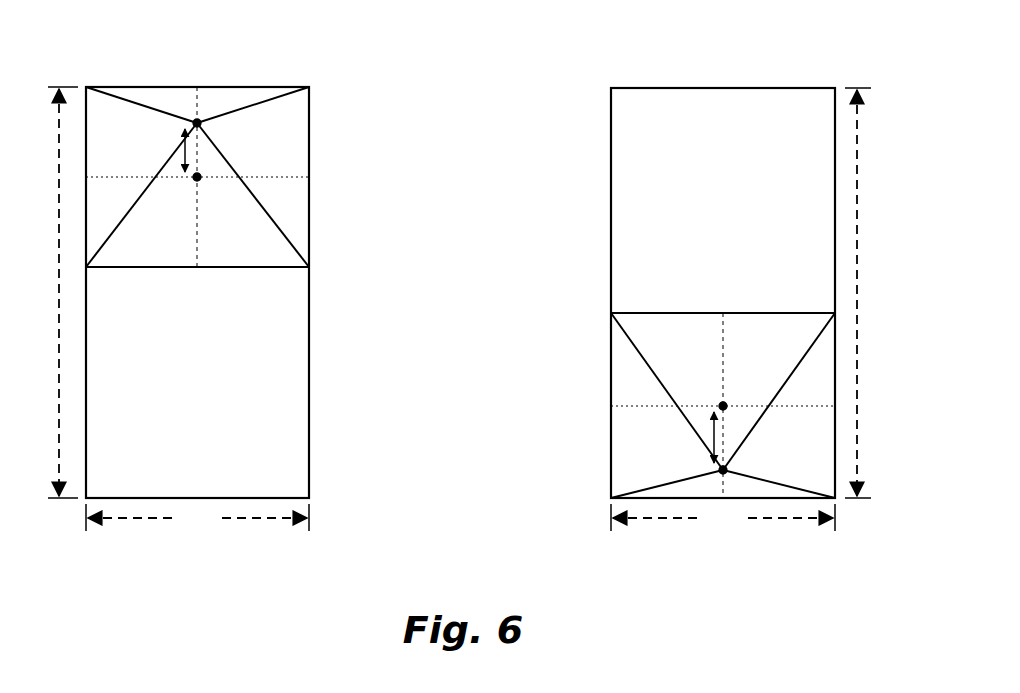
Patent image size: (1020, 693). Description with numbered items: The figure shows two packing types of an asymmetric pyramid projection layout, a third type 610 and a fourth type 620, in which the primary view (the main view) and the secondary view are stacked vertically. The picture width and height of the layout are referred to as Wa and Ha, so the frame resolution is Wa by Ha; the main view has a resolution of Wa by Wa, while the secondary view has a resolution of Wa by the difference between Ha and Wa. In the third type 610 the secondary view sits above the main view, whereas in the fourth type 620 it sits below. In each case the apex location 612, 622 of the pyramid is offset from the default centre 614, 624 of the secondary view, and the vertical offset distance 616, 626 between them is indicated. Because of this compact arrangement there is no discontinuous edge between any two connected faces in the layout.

The third type 610 is at (336, 64).
The apex location 612 is at (200, 125).
The default centre 614 is at (200, 179).
The vertical offset distance 616 is at (187, 150).
The fourth type 620 is at (584, 62).
The apex location 622 is at (720, 469).
The default centre 624 is at (720, 404).
The vertical offset distance 626 is at (712, 430).